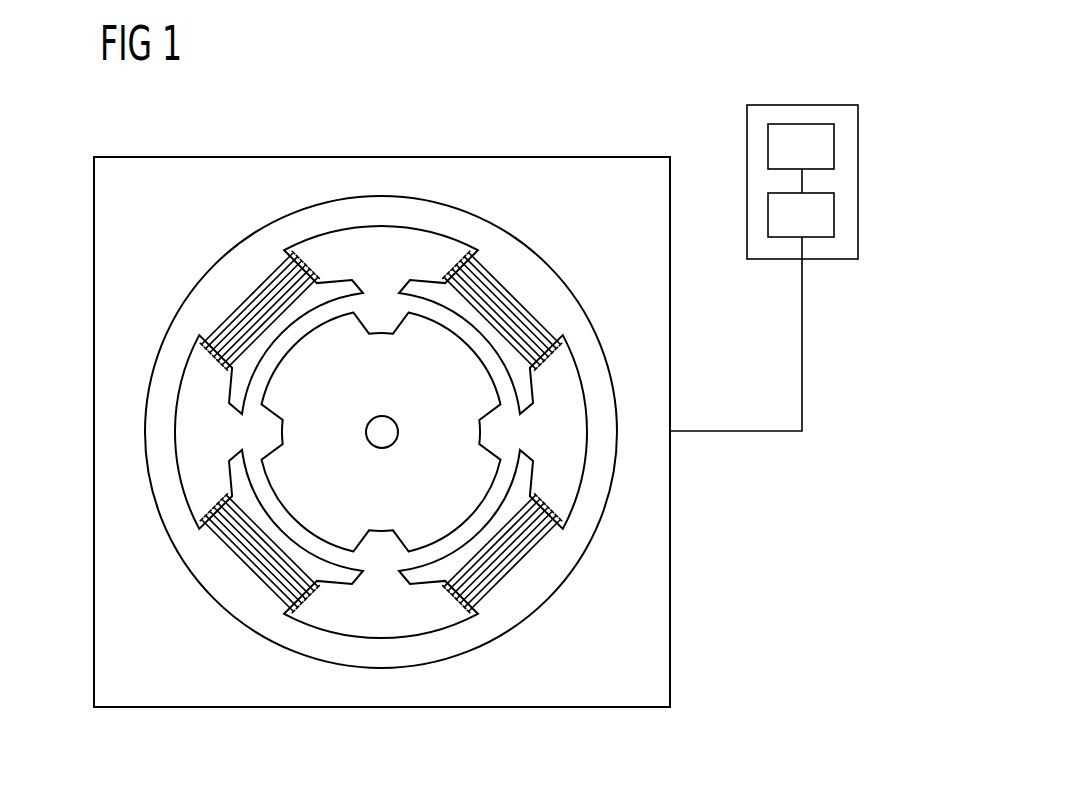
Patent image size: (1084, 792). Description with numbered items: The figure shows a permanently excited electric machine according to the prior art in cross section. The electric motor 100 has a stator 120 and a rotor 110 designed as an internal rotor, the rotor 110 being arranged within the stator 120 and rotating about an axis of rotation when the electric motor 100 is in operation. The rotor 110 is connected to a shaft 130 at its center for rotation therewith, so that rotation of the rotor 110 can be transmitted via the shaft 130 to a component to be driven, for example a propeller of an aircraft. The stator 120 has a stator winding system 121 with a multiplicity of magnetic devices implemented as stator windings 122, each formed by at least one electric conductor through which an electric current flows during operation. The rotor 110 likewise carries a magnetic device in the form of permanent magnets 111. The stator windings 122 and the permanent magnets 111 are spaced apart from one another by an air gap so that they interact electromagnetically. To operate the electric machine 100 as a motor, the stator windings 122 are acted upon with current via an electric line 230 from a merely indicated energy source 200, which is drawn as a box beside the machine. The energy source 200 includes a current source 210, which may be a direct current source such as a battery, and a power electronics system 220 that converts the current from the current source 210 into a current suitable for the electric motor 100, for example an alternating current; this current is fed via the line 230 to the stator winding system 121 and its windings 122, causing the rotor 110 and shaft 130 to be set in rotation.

The electric motor 100 is at (173, 126).
The rotor 110 is at (503, 441).
The permanent magnets 111 is at (450, 352).
The stator 120 is at (387, 176).
The stator winding system 121 is at (576, 321).
The stator windings 122 is at (253, 295).
The shaft 130 is at (390, 432).
The energy source 200 is at (802, 105).
The current source 210 is at (838, 148).
The power electronics system 220 is at (838, 217).
The electric line 230 is at (803, 335).